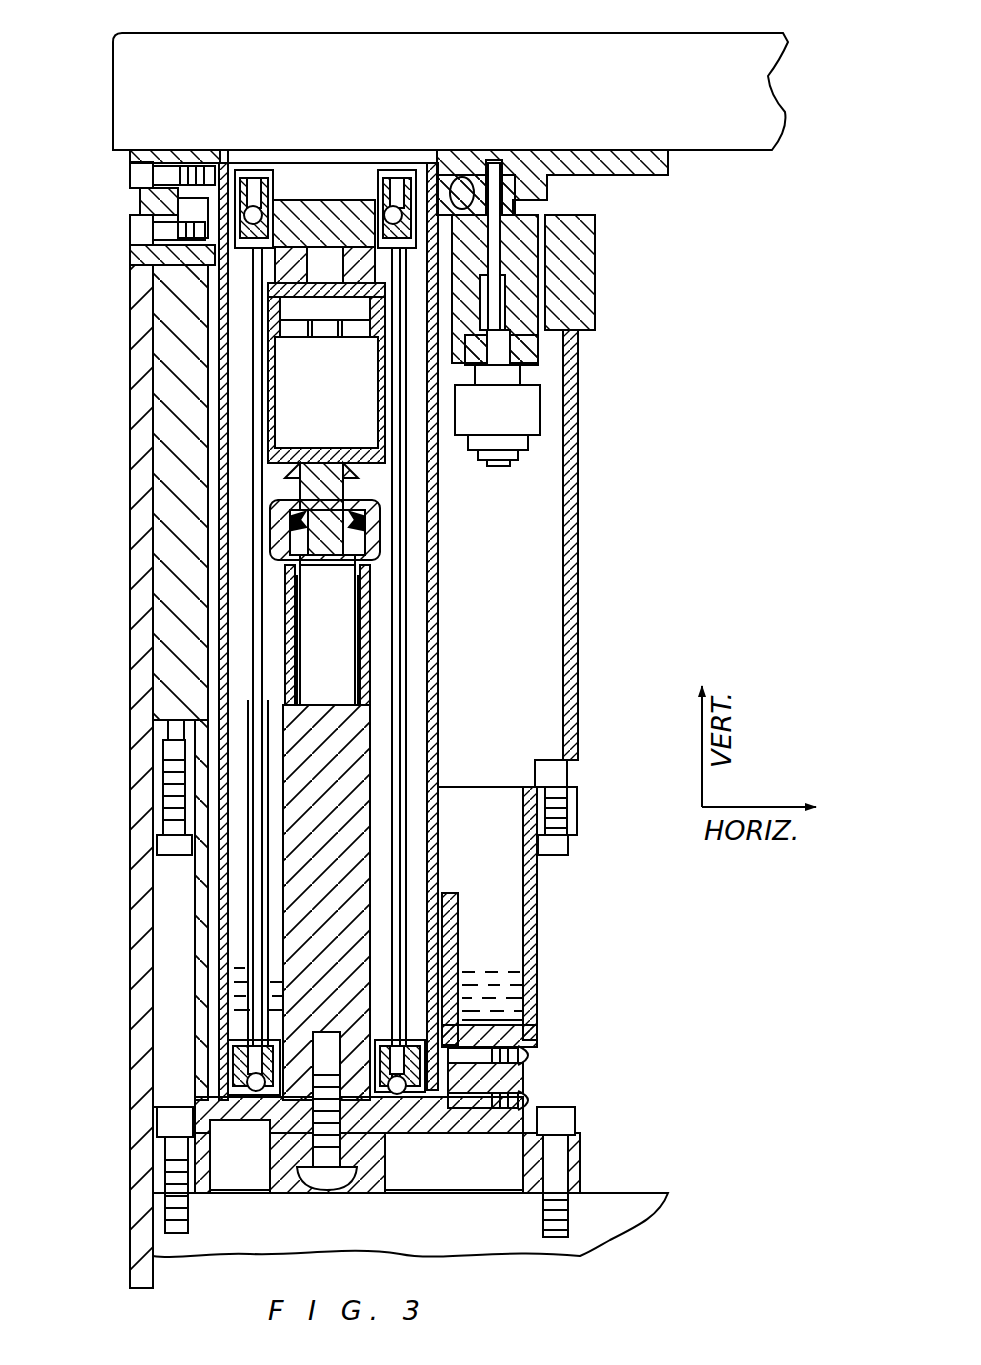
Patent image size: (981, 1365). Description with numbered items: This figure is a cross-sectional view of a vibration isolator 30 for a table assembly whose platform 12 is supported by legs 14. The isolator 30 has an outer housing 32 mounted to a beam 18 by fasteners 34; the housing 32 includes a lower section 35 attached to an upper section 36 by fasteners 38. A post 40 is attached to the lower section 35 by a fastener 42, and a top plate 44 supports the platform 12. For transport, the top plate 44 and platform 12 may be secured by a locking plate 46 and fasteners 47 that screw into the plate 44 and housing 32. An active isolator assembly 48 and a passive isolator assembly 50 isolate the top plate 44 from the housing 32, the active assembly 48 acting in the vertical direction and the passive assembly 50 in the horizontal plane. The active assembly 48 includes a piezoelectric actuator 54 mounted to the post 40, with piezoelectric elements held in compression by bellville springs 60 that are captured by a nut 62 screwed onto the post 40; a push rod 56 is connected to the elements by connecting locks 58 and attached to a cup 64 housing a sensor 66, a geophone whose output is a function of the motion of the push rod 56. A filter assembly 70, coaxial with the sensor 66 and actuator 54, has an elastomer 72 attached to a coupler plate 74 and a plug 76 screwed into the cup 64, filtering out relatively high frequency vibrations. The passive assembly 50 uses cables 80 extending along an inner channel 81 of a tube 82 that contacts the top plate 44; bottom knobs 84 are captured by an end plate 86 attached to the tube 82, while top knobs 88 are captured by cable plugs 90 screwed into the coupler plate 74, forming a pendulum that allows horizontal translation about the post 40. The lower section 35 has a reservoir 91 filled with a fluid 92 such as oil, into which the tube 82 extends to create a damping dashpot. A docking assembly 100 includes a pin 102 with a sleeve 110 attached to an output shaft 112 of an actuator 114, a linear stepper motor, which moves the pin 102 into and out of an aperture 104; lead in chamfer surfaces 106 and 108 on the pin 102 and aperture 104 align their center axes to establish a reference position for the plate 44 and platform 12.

The platform 12 is at (655, 45).
The legs 14 is at (145, 1248).
The beam 18 is at (622, 1200).
The vibration isolator 30 is at (610, 933).
The outer housing 32 is at (586, 640).
The fasteners 34 is at (556, 1122).
The lower section 35 is at (538, 985).
The upper section 36 is at (580, 545).
The fasteners 38 is at (547, 848).
The post 40 is at (352, 855).
The fastener 42 is at (322, 1158).
The top plate 44 is at (188, 150).
The locking plate 46 is at (140, 200).
The fasteners 47 is at (140, 173).
The active isolator assembly 48 is at (374, 568).
The passive isolator assembly 50 is at (446, 760).
The piezoelectric actuator 54 is at (292, 626).
The push rod 56 is at (350, 500).
The connecting locks 58 is at (285, 548).
The bellville springs 60 is at (356, 518).
The nut 62 is at (382, 545).
The cup 64 is at (290, 478).
The sensor 66 is at (326, 380).
The filter assembly 70 is at (266, 262).
The elastomer 72 is at (286, 250).
The coupler plate 74 is at (308, 214).
The plug 76 is at (270, 308).
The cables 80 is at (402, 695).
The inner channel 81 is at (415, 815).
The tube 82 is at (439, 640).
The knobs 84 is at (396, 1094).
The end plate 86 is at (260, 1056).
The knobs 88 is at (402, 183).
The cable plugs 90 is at (390, 215).
The reservoir 91 is at (504, 957).
The fluid 92 is at (490, 980).
The docking assembly 100 is at (526, 370).
The pin 102 is at (532, 205).
The aperture 104 is at (530, 175).
The lead in chamfer surface 106 is at (512, 165).
The lead in chamfer surface 108 is at (470, 180).
The sleeve 110 is at (518, 232).
The output shaft 112 is at (520, 296).
The actuator 114 is at (524, 410).